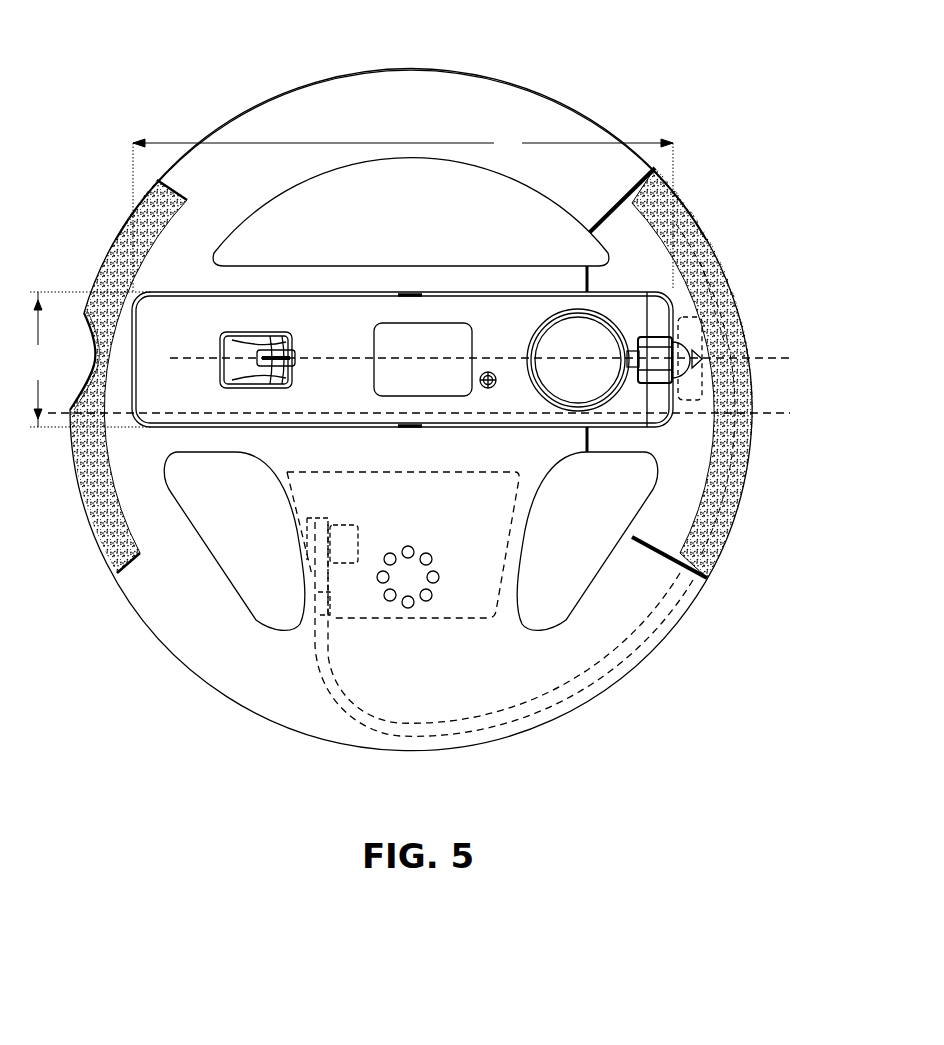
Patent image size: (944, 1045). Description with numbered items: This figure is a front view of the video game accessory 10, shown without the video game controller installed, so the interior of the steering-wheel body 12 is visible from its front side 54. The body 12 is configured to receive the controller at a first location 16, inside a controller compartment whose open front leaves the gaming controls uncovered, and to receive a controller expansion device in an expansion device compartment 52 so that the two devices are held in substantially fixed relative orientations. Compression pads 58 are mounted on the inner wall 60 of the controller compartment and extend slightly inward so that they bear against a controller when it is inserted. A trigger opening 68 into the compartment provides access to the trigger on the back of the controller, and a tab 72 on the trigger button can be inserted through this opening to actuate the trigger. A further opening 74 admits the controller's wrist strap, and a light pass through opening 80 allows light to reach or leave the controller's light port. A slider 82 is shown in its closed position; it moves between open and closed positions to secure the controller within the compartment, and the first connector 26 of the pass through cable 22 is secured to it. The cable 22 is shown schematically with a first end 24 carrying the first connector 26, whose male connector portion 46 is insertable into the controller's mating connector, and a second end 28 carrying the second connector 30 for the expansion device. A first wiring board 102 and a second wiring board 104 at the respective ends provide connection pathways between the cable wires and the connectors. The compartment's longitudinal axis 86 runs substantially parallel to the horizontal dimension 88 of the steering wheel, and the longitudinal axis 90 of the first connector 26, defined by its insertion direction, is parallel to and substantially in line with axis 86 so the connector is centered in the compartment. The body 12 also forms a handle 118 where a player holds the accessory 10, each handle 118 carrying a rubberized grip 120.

The video game accessory 10 is at (128, 105).
The body 12 is at (601, 123).
The first location 16 is at (318, 276).
The pass through cable 22 is at (622, 690).
The first end 24 is at (745, 352).
The first connector 26 is at (660, 388).
The second end 28 is at (332, 616).
The second connector 30 is at (345, 520).
The male connector portion 46 is at (645, 335).
The expansion device compartment 52 is at (333, 343).
The front side 54 is at (250, 135).
The compression pads 58 is at (401, 296).
The inner wall 60 is at (361, 298).
The trigger opening 68 is at (265, 382).
The tab 72 is at (286, 340).
The opening 74 is at (547, 404).
The light pass through opening 80 is at (80, 357).
The slider 82 is at (683, 447).
The longitudinal axis 86 is at (170, 357).
The horizontal dimension 88 is at (125, 413).
The longitudinal axis 90 is at (715, 255).
The first wiring board 102 is at (733, 298).
The second wiring board 104 is at (288, 530).
The handle 118 is at (77, 260).
The grip 120 is at (122, 240).